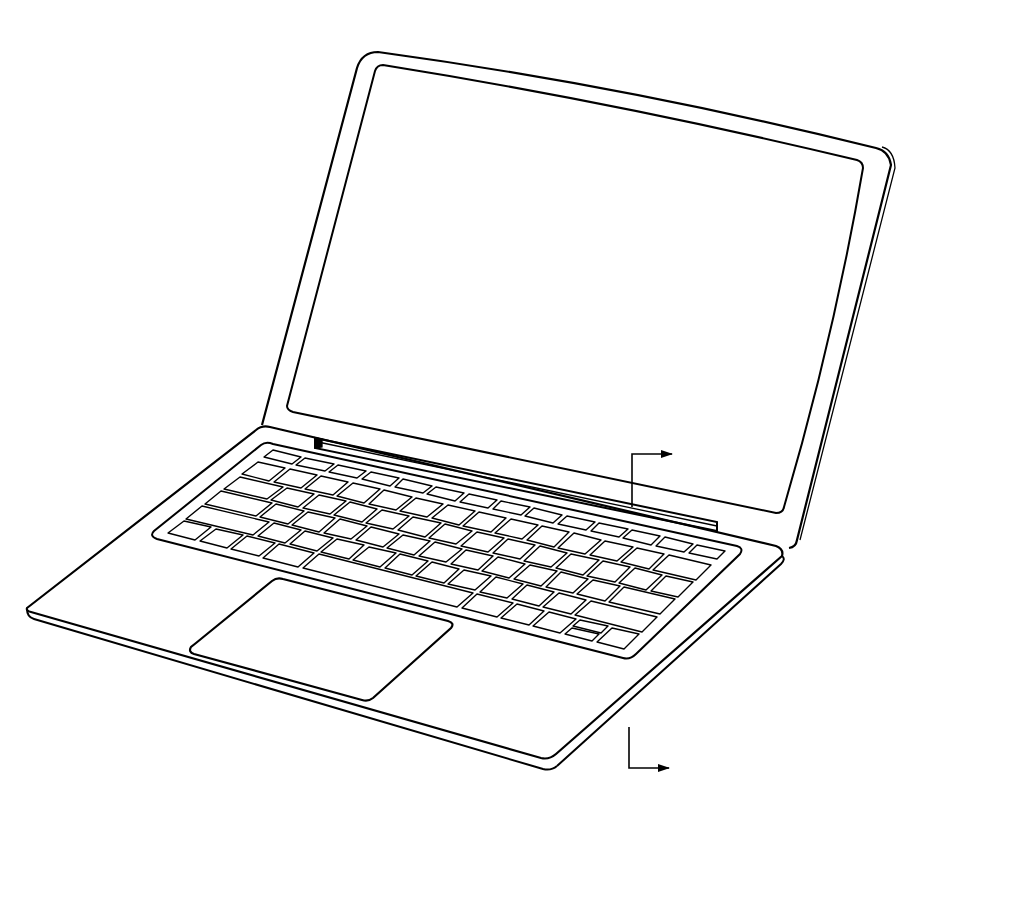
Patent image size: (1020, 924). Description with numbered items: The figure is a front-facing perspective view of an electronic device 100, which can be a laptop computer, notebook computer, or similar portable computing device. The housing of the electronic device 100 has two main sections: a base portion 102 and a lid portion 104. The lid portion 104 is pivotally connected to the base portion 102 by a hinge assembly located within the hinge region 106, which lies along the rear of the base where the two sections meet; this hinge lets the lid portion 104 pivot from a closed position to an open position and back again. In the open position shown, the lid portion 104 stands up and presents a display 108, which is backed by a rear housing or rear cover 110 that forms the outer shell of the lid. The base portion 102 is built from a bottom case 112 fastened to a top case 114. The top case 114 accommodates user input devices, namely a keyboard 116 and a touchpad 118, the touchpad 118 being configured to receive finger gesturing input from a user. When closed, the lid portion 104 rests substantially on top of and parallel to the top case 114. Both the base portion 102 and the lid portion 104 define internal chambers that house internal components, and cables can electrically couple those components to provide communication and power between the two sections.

The electronic device 100 is at (228, 85).
The base portion 102 is at (140, 508).
The lid portion 104 is at (297, 255).
The hinge region 106 is at (520, 477).
The display 108 is at (556, 305).
The rear cover 110 is at (841, 366).
The bottom case 112 is at (642, 698).
The top case 114 is at (443, 733).
The keyboard 116 is at (522, 642).
The touchpad 118 is at (341, 655).